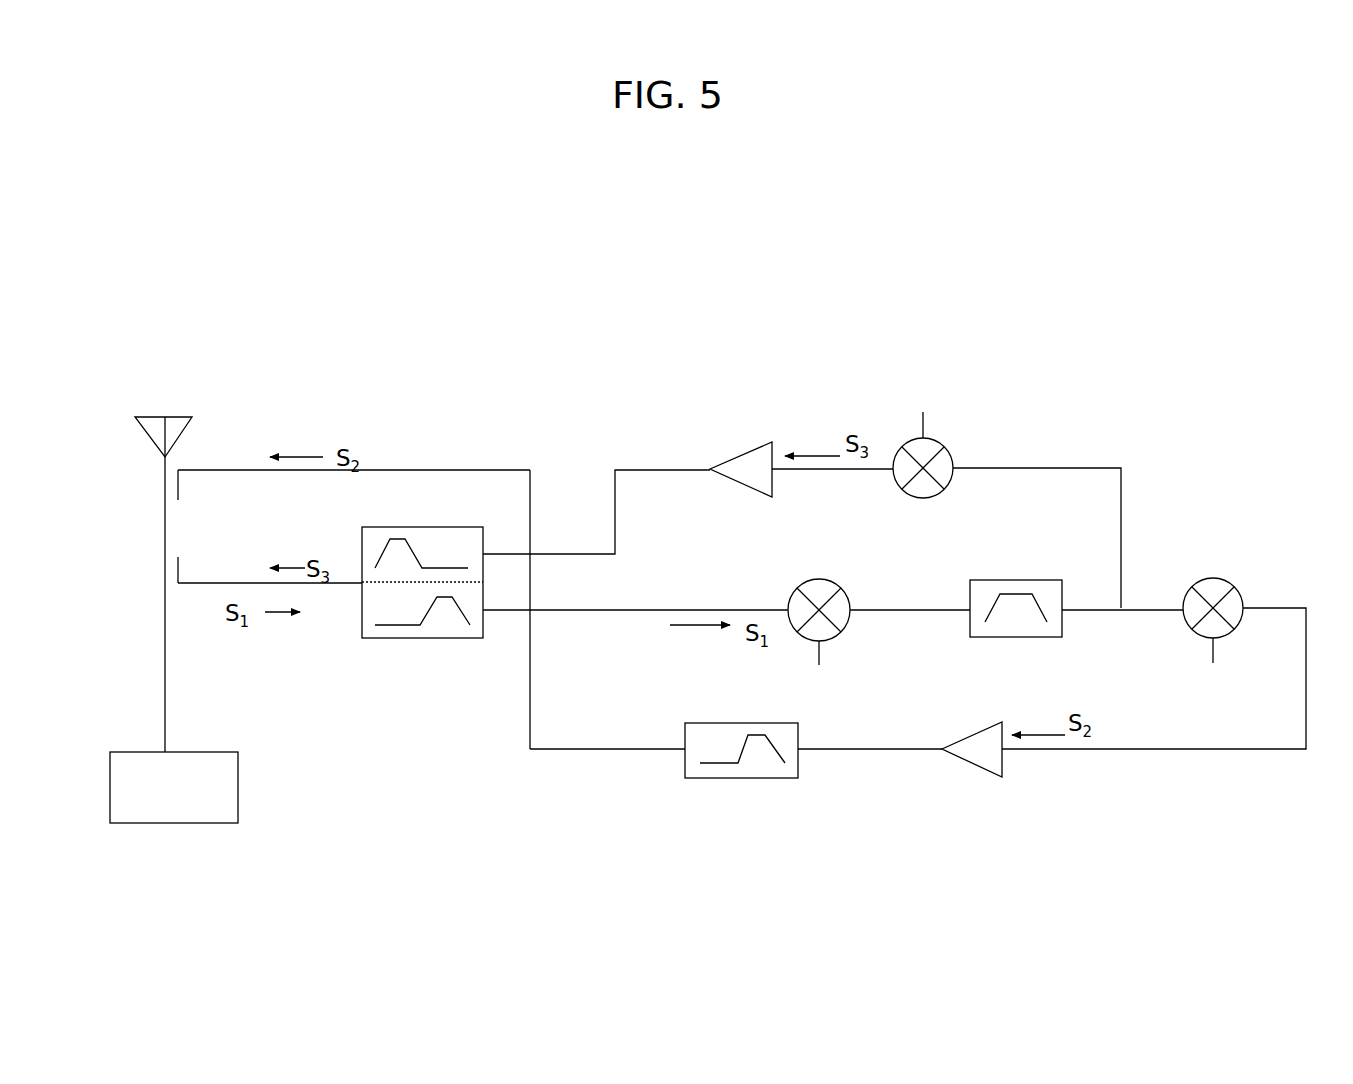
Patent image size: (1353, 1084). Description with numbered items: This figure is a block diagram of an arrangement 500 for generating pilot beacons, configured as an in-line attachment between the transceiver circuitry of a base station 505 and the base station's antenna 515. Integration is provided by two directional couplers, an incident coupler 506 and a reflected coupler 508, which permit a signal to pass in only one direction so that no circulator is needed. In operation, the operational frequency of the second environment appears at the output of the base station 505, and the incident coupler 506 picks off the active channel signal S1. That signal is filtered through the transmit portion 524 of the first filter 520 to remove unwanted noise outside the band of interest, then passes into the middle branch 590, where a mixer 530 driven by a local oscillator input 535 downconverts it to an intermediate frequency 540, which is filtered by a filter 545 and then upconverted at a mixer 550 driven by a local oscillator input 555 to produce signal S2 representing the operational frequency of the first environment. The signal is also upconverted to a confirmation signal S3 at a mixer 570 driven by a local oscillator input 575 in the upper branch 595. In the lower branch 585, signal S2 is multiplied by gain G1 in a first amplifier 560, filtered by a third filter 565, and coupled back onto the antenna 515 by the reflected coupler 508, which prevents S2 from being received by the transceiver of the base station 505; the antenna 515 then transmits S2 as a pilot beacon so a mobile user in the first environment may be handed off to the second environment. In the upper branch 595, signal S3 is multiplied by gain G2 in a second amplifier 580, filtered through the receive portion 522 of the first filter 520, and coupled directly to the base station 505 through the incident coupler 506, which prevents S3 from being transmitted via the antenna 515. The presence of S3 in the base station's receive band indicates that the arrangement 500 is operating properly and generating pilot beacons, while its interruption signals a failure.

The arrangement 500 is at (1036, 292).
The base station 505 is at (200, 824).
The incident coupler 506 is at (192, 585).
The reflected coupler 508 is at (208, 473).
The antenna 515 is at (150, 417).
The first filter 520 is at (415, 557).
The receive portion 522 is at (398, 526).
The transmit portion 524 is at (445, 640).
The mixer 530 is at (797, 586).
The local oscillator input 535 is at (820, 650).
The intermediate frequency 540 is at (900, 609).
The filter 545 is at (1008, 579).
The mixer 550 is at (1212, 580).
The local oscillator input 555 is at (1214, 648).
The first amplifier 560 is at (985, 776).
The third filter 565 is at (738, 779).
The mixer 570 is at (920, 497).
The local oscillator input 575 is at (924, 422).
The second amplifier 580 is at (752, 442).
The lower branch 585 is at (572, 750).
The middle branch 590 is at (700, 608).
The upper branch 595 is at (613, 485).